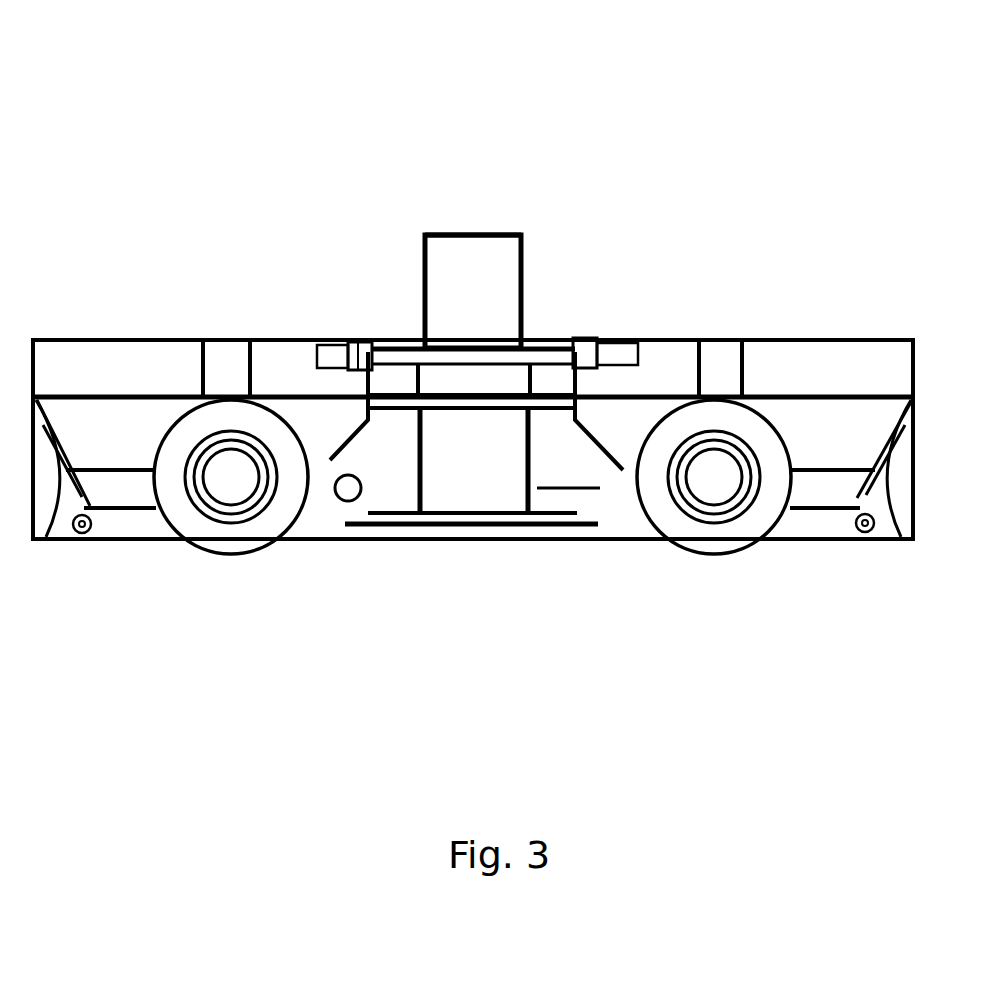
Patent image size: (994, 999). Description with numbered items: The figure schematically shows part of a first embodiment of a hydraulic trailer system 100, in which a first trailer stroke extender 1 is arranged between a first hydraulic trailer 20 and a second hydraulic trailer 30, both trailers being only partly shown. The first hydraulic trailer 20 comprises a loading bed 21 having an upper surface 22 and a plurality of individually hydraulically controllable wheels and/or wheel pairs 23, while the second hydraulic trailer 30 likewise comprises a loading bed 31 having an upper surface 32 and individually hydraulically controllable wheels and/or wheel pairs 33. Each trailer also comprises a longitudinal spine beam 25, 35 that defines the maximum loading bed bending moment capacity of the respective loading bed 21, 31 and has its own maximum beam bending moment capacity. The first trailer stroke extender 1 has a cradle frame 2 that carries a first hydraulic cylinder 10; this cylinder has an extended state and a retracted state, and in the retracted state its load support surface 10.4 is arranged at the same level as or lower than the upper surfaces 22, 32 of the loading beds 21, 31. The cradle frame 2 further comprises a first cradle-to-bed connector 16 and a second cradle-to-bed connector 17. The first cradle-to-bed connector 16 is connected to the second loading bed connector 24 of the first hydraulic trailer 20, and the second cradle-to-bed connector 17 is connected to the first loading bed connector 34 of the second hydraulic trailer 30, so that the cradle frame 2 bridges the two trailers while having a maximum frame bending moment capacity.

The first trailer stroke extender 1 is at (468, 553).
The hydraulic trailer system 100 is at (260, 185).
The cradle frame 2 is at (542, 338).
The first hydraulic cylinder 10 is at (445, 270).
The load support surface 10.4 is at (472, 232).
The first cradle-to-bed connector 16 is at (585, 345).
The second cradle-to-bed connector 17 is at (363, 338).
The first hydraulic trailer 20 is at (822, 365).
The loading bed 21 is at (662, 355).
The upper surface 22 is at (775, 338).
The individually hydraulically controllable wheels and/or wheel pairs 23 is at (717, 490).
The second loading bed connector 24 is at (632, 338).
The longitudinal spine beam 25 is at (825, 440).
The second hydraulic trailer 30 is at (165, 358).
The loading bed 31 is at (125, 370).
The upper surface 32 is at (88, 340).
The individually hydraulically controllable wheels and/or wheel pairs 33 is at (230, 493).
The first loading bed connector 34 is at (330, 340).
The longitudinal spine beam 35 is at (127, 435).